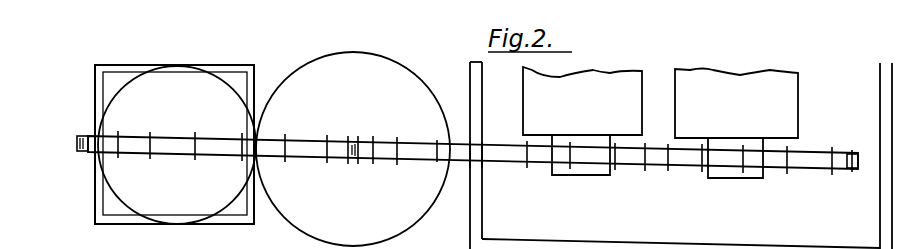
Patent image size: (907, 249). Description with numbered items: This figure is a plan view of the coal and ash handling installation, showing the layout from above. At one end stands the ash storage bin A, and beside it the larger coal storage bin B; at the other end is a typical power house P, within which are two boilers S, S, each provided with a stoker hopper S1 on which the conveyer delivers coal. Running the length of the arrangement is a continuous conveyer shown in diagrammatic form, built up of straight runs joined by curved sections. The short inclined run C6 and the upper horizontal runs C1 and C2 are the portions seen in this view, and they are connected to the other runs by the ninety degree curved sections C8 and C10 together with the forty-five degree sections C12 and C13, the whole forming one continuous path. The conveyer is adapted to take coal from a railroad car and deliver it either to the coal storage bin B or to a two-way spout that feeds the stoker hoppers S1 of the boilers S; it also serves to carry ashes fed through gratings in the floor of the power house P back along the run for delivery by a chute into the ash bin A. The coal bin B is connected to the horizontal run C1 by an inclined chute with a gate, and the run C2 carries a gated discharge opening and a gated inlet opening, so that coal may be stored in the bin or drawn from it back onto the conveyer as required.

The ash storage bin A is at (175, 144).
The coal storage bin B is at (353, 149).
The power house P is at (681, 155).
The boiler S is at (660, 102).
The stoker hopper S1 is at (578, 170).
The short inclined run C6 is at (107, 136).
The 45 degree section C12 is at (86, 136).
The 45 degree section C13 is at (141, 137).
The upper horizontal run C1 is at (296, 140).
The 90 degree curved section C8 is at (352, 159).
The upper horizontal run C2 is at (494, 161).
The 90 degree curved section C10 is at (840, 152).